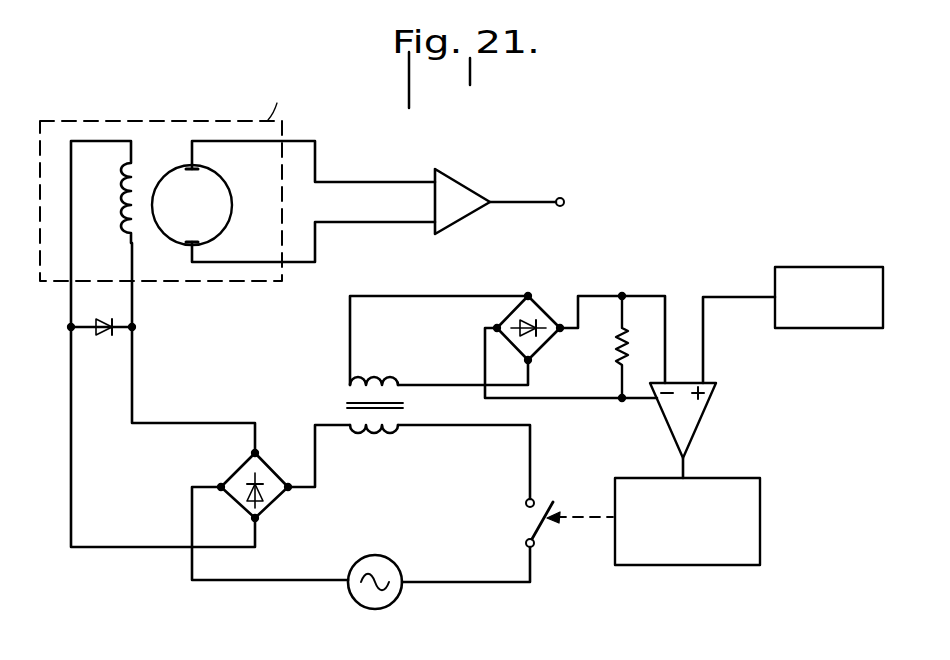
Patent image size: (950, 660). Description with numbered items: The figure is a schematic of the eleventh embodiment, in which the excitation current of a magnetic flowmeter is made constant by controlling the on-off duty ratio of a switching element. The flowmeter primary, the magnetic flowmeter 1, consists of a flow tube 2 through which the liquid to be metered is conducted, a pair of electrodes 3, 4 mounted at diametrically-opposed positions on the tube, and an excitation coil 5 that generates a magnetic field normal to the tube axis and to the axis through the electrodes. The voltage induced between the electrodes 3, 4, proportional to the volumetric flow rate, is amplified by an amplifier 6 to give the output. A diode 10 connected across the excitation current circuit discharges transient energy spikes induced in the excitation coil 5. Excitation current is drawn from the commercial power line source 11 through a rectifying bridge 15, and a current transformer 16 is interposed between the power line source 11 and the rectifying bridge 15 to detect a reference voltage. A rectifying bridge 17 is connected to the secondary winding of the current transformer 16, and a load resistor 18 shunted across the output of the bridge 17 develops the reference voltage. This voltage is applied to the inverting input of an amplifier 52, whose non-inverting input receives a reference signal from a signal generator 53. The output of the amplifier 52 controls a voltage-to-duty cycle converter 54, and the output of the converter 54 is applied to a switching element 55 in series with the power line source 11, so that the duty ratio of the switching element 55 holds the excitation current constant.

The magnetic flowmeter 1 is at (74, 120).
The flow tube 2 is at (173, 167).
The electrode 3 is at (200, 175).
The electrode 4 is at (198, 230).
The excitation coil 5 is at (119, 211).
The amplifier 6 is at (462, 184).
The diode 10 is at (98, 335).
The commercial power line source 11 is at (401, 556).
The rectifying bridge 15 is at (267, 510).
The current transformer 16 is at (375, 433).
The rectifying bridge 17 is at (543, 347).
The load resistor 18 is at (617, 350).
The amplifier 52 is at (705, 418).
The signal generator 53 is at (832, 263).
The voltage-to-duty cycle converter 54 is at (762, 525).
The switching element 55 is at (527, 529).